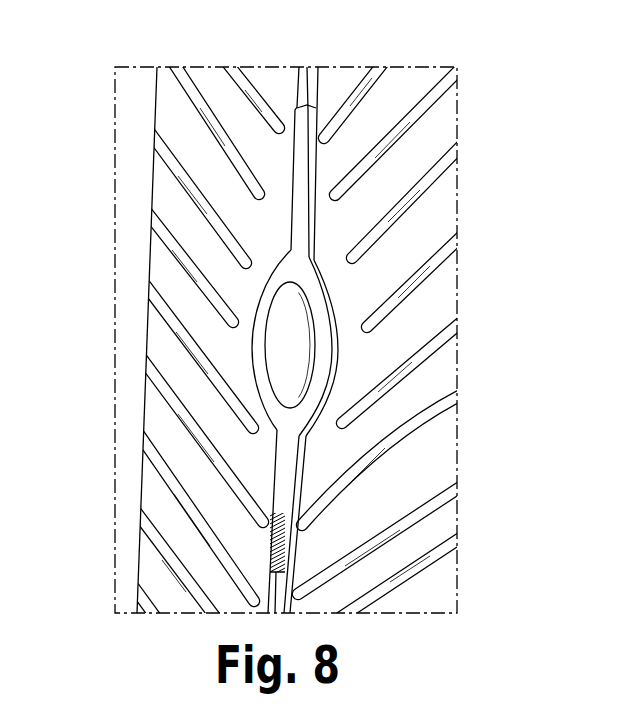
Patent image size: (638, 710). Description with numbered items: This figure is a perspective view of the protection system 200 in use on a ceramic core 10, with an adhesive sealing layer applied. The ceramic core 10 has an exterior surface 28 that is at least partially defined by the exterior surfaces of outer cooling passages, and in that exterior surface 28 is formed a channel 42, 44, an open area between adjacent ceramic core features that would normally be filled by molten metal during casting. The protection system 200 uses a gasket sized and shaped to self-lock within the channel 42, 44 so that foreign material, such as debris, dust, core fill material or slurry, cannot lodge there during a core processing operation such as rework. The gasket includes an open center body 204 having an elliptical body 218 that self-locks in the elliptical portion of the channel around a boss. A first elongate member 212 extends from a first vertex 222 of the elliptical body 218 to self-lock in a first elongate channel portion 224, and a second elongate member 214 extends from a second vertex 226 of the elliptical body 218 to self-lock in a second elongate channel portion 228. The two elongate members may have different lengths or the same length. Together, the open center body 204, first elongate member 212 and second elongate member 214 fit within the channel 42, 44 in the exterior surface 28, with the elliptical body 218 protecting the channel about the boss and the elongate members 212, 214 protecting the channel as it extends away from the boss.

The ceramic core 10 is at (128, 72).
The protection system 200 is at (132, 172).
The channel 42 is at (406, 130).
The channel 44 is at (406, 130).
The second elongate member 214 is at (303, 153).
The second elongate channel portion 228 is at (317, 213).
The first vertex 222 is at (307, 297).
The second vertex 226 is at (302, 294).
The elliptical body 218 is at (313, 347).
The open center body 204 is at (325, 368).
The exterior surface 28 is at (433, 450).
The first elongate channel portion 224 is at (290, 473).
The first elongate member 212 is at (284, 548).